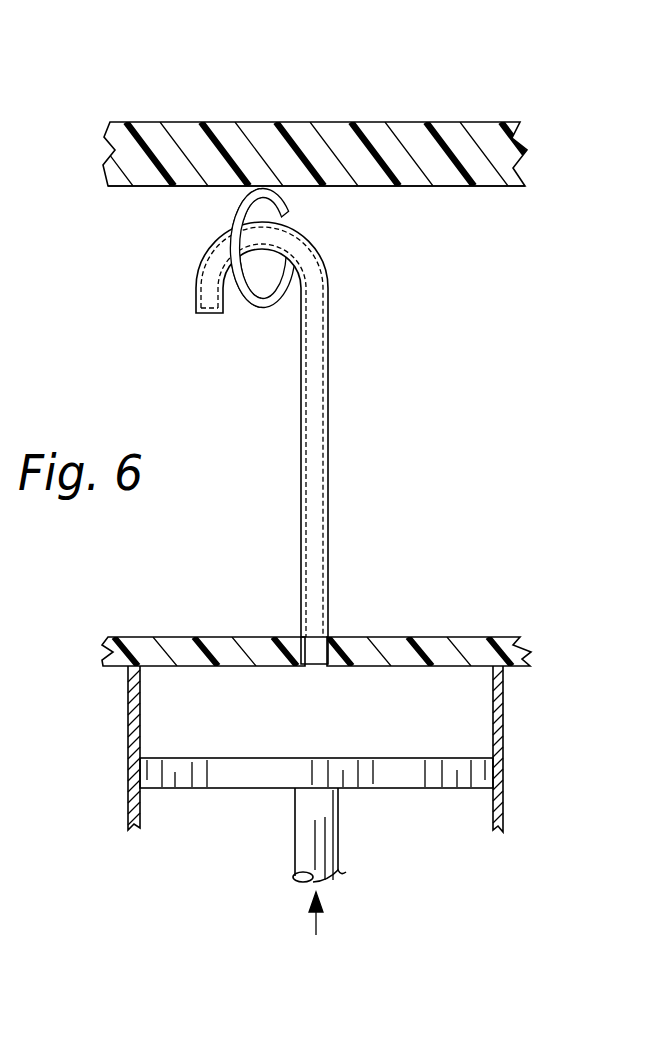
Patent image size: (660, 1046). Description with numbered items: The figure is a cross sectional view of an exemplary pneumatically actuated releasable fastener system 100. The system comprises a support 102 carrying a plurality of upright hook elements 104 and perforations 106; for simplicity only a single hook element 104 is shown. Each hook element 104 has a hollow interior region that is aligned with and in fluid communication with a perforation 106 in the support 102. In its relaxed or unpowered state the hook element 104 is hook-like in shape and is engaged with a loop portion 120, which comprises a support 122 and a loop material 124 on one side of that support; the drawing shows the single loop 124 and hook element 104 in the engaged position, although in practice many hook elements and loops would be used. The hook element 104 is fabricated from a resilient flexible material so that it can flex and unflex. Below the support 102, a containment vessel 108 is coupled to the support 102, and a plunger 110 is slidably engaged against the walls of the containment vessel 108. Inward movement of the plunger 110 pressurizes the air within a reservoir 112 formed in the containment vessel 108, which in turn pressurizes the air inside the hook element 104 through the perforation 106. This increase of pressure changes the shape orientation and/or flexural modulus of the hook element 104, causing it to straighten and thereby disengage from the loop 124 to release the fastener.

The pneumatically actuated releasable fastener system 100 is at (154, 97).
The loop portion 120 is at (552, 160).
The support 122 is at (432, 187).
The loop material 124 is at (236, 214).
The hook element 104 is at (328, 388).
The support 102 is at (432, 637).
The perforation 106 is at (318, 666).
The containment vessel 108 is at (128, 741).
The reservoir 112 is at (402, 714).
The plunger 110 is at (295, 823).